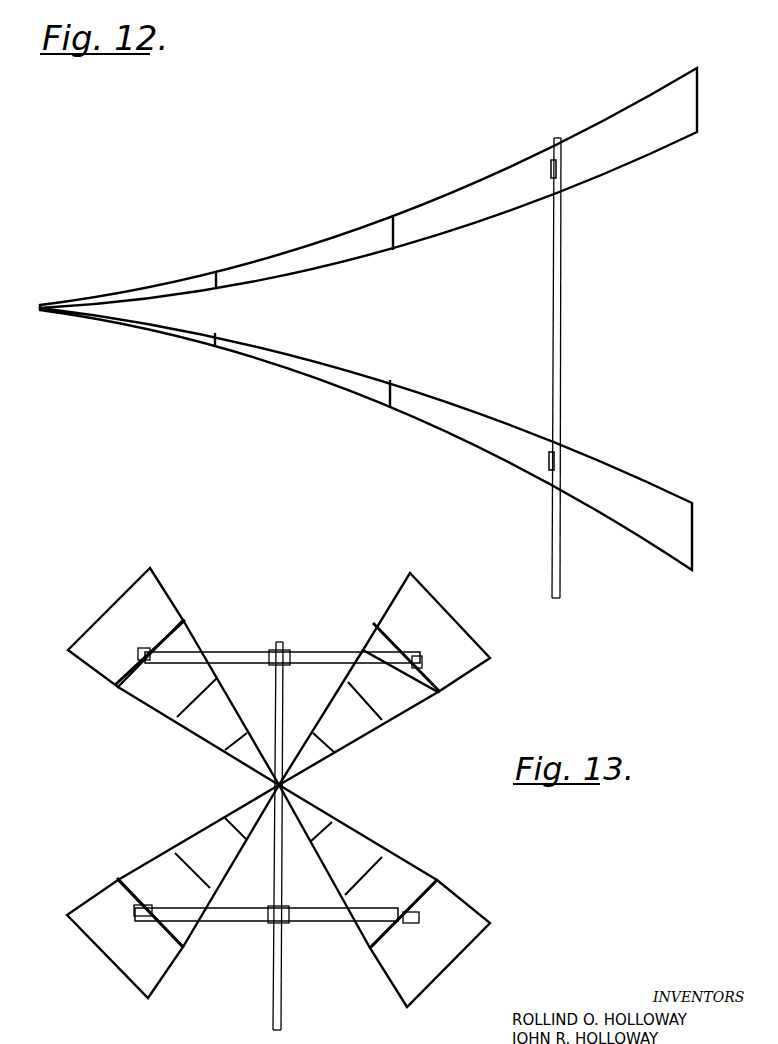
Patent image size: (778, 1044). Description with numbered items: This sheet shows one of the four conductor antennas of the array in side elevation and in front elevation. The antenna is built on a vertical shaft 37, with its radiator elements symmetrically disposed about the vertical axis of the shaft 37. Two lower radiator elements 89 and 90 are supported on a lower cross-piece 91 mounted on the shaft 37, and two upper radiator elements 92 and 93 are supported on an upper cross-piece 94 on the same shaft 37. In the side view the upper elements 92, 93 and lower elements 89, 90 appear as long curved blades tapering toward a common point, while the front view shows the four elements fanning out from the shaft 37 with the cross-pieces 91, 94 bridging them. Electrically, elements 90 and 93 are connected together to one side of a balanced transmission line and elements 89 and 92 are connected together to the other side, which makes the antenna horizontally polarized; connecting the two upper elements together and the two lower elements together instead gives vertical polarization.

In FIG. 12, the shaft 37 is at (560, 366).
In FIG. 13, the shaft 37 is at (283, 722).
In FIG. 12, the lower radiator element 89 is at (455, 418).
In FIG. 13, the lower radiator element 89 is at (455, 928).
In FIG. 13, the lower radiator element 90 is at (137, 965).
In FIG. 12, the cross-piece 91 is at (550, 460).
In FIG. 13, the cross-piece 91 is at (232, 913).
In FIG. 13, the upper radiator element 92 is at (152, 607).
In FIG. 12, the upper radiator element 93 is at (475, 193).
In FIG. 13, the upper radiator element 93 is at (432, 642).
In FIG. 12, the cross-piece 94 is at (550, 182).
In FIG. 13, the cross-piece 94 is at (317, 660).